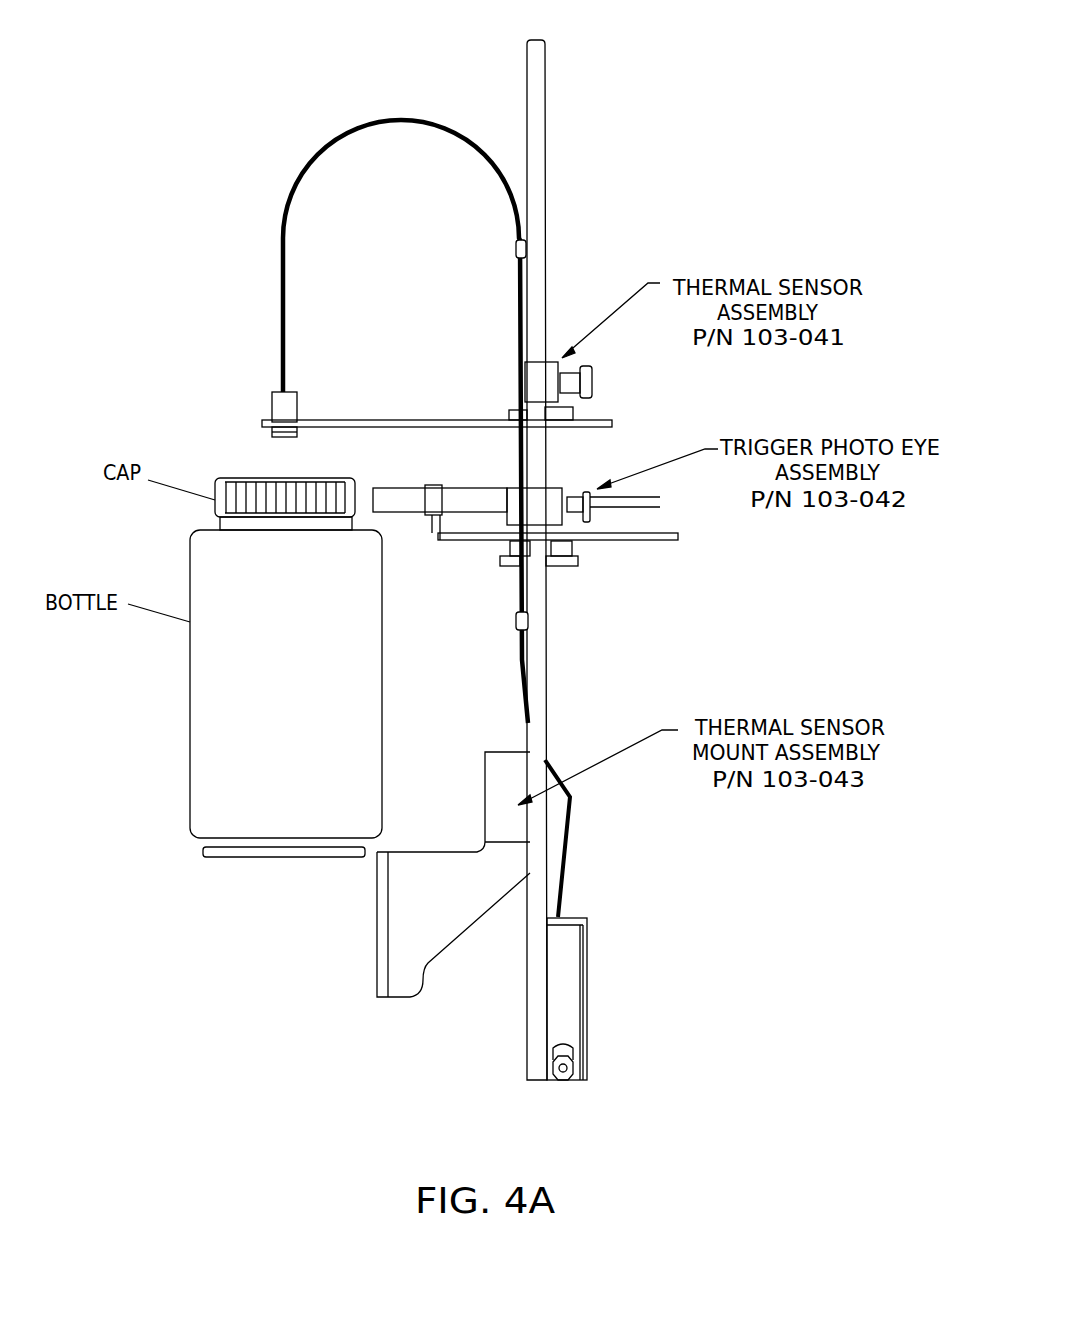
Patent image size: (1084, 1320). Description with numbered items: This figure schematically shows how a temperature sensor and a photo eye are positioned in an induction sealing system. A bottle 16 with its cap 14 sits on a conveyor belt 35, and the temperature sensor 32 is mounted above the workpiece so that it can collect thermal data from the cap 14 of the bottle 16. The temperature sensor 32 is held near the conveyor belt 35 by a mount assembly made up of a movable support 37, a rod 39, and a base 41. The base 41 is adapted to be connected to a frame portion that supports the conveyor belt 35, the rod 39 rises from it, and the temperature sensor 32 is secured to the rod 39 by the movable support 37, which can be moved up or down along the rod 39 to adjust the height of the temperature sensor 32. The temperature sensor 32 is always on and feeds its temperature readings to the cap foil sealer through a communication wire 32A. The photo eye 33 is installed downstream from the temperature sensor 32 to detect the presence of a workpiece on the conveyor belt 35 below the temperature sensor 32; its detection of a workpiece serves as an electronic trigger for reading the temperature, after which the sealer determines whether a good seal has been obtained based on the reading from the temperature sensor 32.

The cap 14 is at (215, 507).
The bottle 16 is at (218, 730).
The temperature sensor 32 is at (270, 403).
The communication wire 32A is at (345, 135).
The photo eye 33 is at (400, 510).
The conveyor belt 35 is at (203, 852).
The movable support 37 is at (539, 377).
The rod 39 is at (545, 148).
The base 41 is at (418, 913).